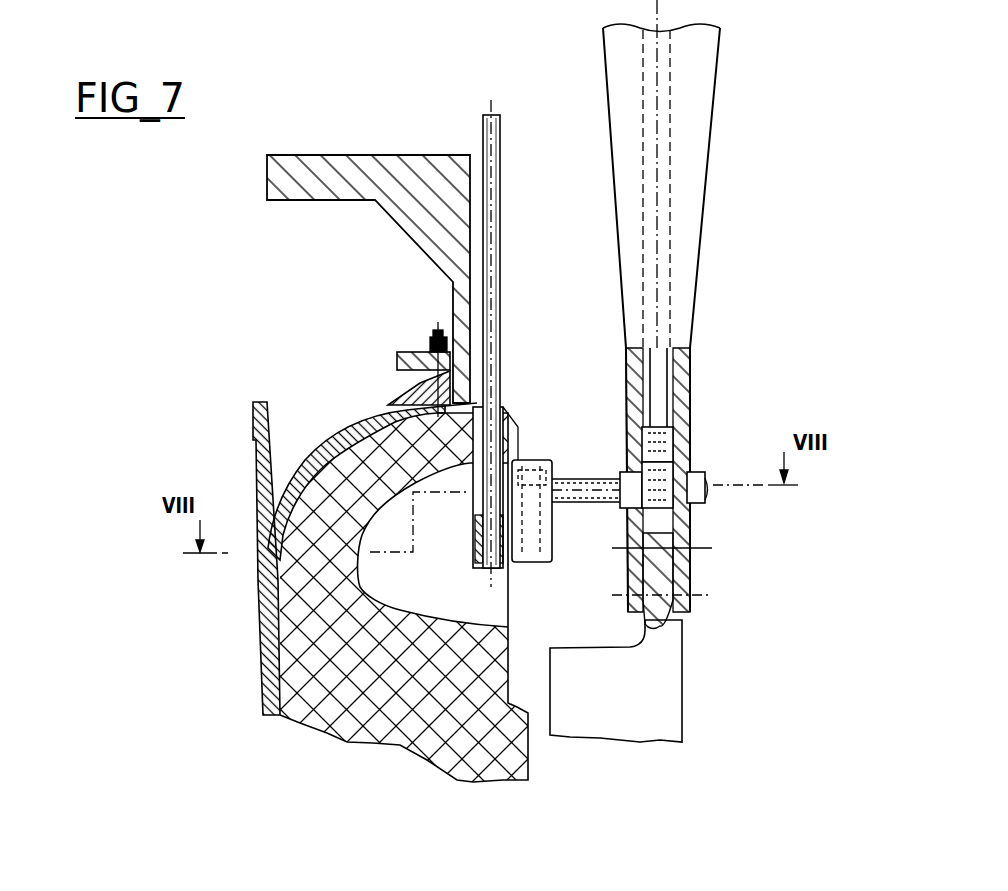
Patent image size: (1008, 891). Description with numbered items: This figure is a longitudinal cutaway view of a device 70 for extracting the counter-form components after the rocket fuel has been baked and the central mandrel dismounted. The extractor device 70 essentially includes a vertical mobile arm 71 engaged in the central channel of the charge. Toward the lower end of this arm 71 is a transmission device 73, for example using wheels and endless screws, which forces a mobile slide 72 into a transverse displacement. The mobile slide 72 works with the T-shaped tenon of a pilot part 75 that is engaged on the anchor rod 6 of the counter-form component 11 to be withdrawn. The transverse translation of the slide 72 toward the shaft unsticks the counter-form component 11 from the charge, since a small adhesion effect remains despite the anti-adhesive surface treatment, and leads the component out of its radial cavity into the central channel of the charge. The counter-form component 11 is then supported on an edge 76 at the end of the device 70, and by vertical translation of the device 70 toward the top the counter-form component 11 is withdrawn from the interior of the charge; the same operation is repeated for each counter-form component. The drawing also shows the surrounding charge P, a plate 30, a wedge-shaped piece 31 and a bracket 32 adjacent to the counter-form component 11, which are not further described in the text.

The anchor rod 6 is at (485, 134).
The counter-form component 11 is at (410, 563).
The plate 30 is at (262, 678).
The wedge plate 31 is at (398, 388).
The bracket 32 is at (410, 231).
The extractor device 70 is at (728, 198).
The vertical mobile arm 71 is at (702, 132).
The mobile slide 72 is at (538, 467).
The transmission device 73 is at (690, 528).
The pilot part 75 is at (515, 425).
The edge 76 is at (593, 645).
The body P is at (385, 703).